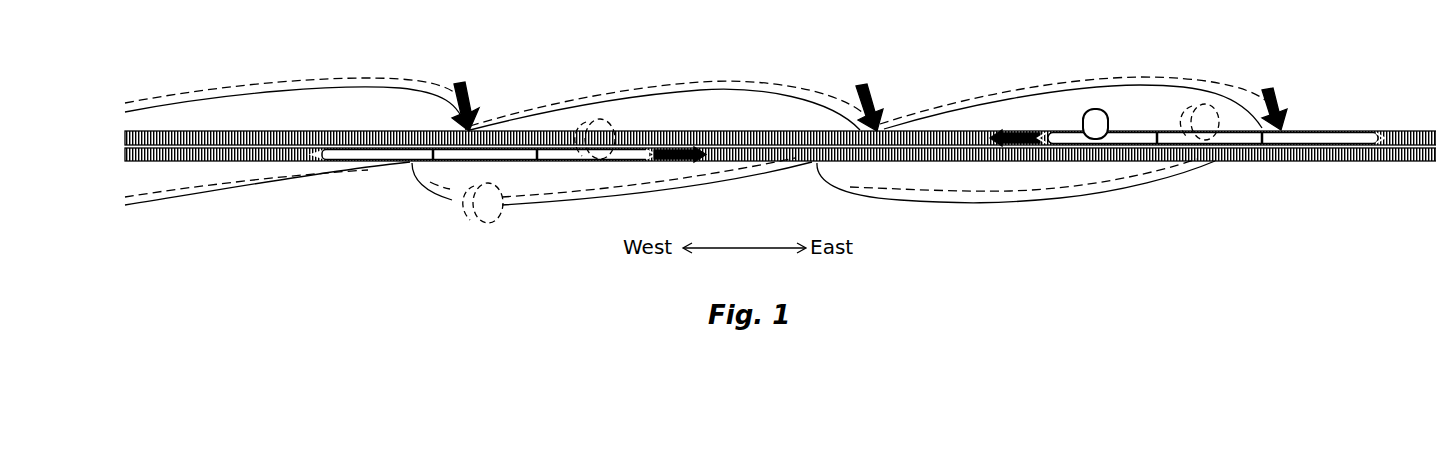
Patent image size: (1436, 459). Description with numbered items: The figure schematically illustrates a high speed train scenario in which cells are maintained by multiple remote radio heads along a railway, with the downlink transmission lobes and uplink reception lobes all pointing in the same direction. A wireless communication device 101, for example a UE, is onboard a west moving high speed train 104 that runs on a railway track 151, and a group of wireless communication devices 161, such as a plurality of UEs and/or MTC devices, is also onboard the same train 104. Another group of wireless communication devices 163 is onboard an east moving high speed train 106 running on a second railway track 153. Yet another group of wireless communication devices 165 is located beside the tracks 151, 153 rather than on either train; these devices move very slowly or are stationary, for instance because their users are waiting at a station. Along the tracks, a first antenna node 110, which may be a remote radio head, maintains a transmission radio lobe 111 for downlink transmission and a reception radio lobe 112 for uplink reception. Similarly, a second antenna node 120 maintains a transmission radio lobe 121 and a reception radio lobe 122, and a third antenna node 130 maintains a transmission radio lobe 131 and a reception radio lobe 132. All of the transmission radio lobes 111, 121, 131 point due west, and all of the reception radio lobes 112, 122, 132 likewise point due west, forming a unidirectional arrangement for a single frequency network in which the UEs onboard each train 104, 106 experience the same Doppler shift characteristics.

The wireless communication device 101 is at (1085, 109).
The west moving high speed train 104 is at (1312, 131).
The east moving high speed train 106 is at (352, 165).
The first antenna node 110 is at (466, 85).
The transmission radio lobe 111 is at (283, 88).
The reception radio lobe 112 is at (353, 81).
The second antenna node 120 is at (868, 90).
The transmission radio lobe 121 is at (700, 81).
The reception radio lobe 122 is at (769, 82).
The third antenna node 130 is at (1266, 91).
The transmission radio lobe 131 is at (1137, 84).
The reception radio lobe 132 is at (1200, 79).
The railway track 151 is at (1398, 131).
The railway track 153 is at (212, 162).
The group of wireless communication devices 161 is at (1229, 162).
The group of wireless communication devices 163 is at (573, 119).
The group of wireless communication devices 165 is at (497, 213).